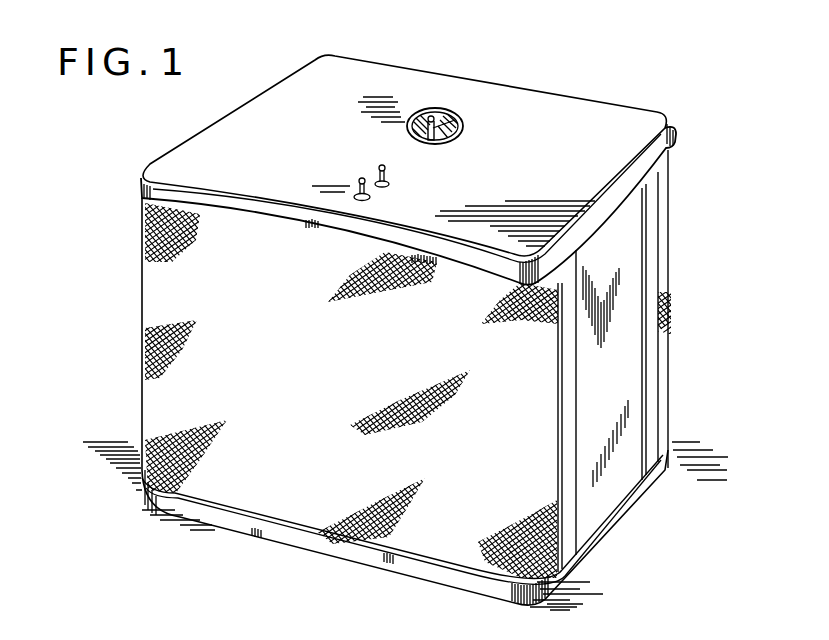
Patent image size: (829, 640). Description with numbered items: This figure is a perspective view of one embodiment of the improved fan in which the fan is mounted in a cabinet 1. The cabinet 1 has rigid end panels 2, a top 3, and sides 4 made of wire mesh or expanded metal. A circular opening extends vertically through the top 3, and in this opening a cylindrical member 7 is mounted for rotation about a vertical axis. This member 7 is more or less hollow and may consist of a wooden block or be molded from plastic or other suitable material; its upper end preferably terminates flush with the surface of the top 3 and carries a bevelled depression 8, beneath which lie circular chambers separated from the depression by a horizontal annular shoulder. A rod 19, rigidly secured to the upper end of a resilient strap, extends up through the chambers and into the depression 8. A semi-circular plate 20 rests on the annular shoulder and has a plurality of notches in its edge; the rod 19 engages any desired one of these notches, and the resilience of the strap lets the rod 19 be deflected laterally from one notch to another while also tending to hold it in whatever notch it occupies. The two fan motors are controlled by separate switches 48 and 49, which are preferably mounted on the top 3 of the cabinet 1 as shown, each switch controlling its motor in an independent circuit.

The cabinet 1 is at (240, 521).
The rigid end panels 2 is at (610, 501).
The top 3 is at (648, 115).
The wire mesh or expanded metal sides 4 is at (673, 317).
The cylindrical member 7 is at (427, 109).
The bevelled depression 8 is at (445, 118).
The rod 19 is at (450, 140).
The semi-circular plate 20 is at (403, 122).
The switch 48 is at (358, 188).
The switch 49 is at (385, 180).